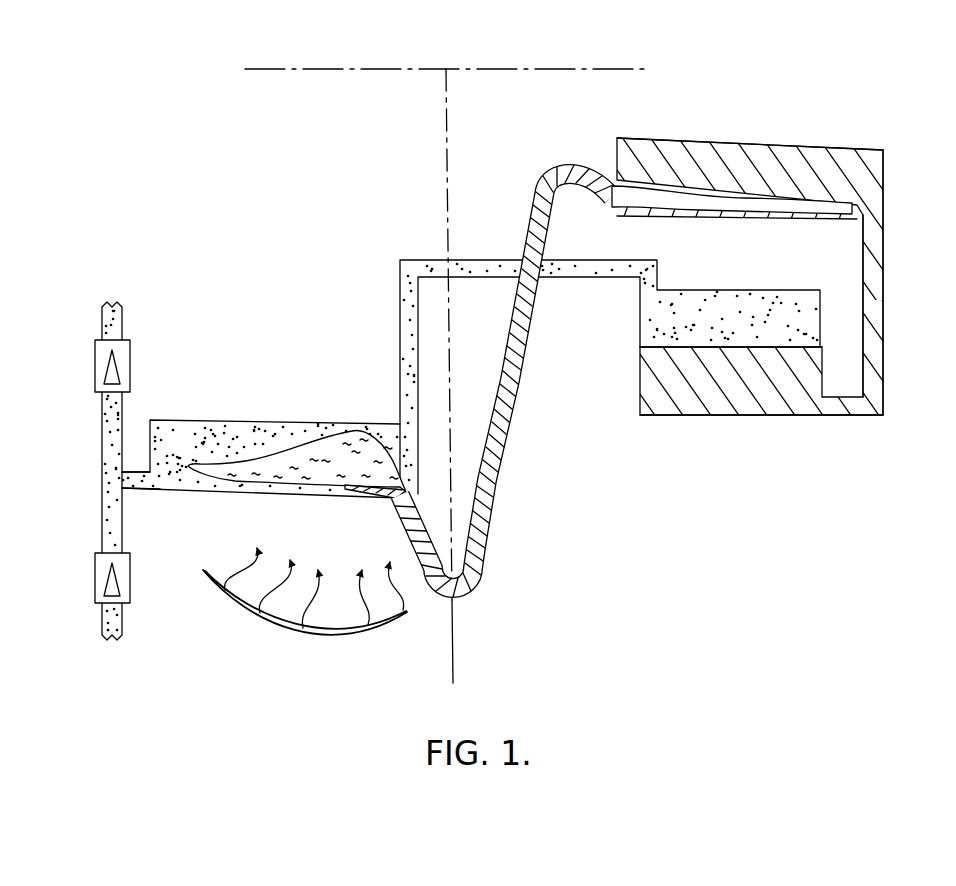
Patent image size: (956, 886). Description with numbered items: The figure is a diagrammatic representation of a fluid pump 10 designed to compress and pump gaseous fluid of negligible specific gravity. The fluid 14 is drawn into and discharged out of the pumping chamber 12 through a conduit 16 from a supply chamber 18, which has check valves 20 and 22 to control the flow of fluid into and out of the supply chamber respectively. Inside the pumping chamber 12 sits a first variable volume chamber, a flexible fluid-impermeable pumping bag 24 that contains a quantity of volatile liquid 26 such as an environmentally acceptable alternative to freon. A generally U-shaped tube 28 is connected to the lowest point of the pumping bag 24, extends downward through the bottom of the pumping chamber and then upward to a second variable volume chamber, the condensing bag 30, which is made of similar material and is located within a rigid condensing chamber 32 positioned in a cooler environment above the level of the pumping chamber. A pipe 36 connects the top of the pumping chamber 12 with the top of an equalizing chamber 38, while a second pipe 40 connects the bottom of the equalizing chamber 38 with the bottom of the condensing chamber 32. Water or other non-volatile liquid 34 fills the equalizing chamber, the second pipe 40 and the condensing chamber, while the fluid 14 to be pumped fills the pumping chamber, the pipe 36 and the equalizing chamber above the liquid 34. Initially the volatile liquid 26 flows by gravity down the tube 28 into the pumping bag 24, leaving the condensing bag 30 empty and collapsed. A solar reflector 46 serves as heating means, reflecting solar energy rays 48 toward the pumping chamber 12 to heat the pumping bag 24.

The casting apparatus 10 is at (464, 40).
The pumping chamber 12 is at (185, 420).
The fluid 14 is at (266, 440).
The conduit 16 is at (133, 492).
The supply chamber 18 is at (102, 440).
The check valve 20 is at (102, 557).
The check valve 22 is at (130, 343).
The pumping bag 24 is at (230, 483).
The volatile liquid 26 is at (398, 497).
The U-shaped tube 28 is at (530, 338).
The condensing bag 30 is at (777, 215).
The condensing chamber 32 is at (698, 138).
The non-volatile liquid 34 is at (756, 159).
The pipe 36 is at (435, 260).
The equalizing chamber 38 is at (748, 413).
The second pipe 40 is at (860, 287).
The solar reflector 46 is at (267, 630).
The rays 48 is at (314, 588).